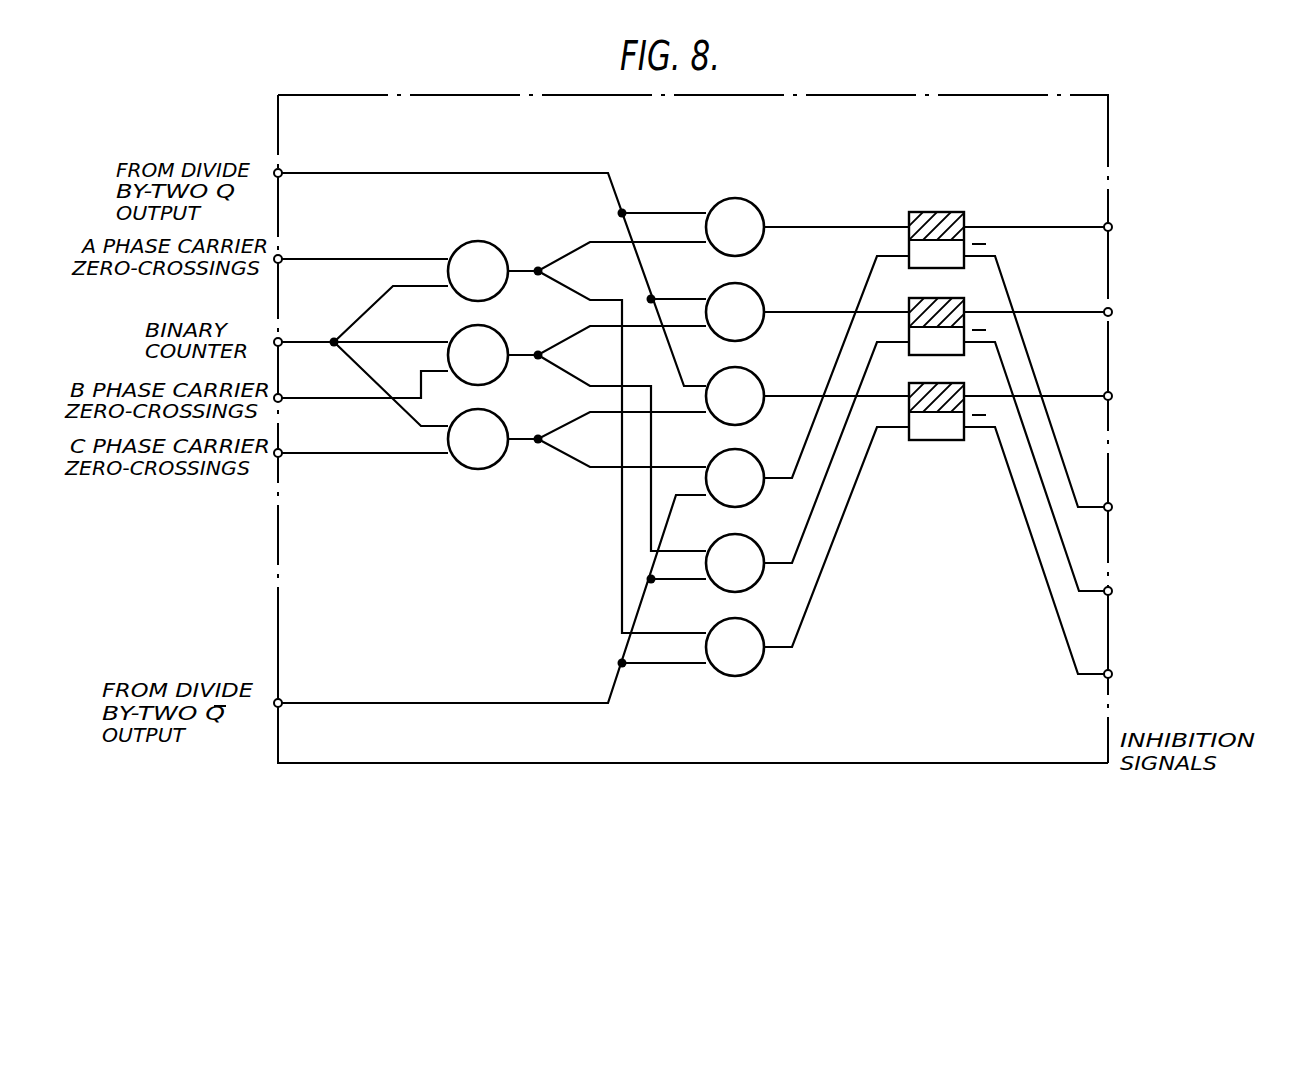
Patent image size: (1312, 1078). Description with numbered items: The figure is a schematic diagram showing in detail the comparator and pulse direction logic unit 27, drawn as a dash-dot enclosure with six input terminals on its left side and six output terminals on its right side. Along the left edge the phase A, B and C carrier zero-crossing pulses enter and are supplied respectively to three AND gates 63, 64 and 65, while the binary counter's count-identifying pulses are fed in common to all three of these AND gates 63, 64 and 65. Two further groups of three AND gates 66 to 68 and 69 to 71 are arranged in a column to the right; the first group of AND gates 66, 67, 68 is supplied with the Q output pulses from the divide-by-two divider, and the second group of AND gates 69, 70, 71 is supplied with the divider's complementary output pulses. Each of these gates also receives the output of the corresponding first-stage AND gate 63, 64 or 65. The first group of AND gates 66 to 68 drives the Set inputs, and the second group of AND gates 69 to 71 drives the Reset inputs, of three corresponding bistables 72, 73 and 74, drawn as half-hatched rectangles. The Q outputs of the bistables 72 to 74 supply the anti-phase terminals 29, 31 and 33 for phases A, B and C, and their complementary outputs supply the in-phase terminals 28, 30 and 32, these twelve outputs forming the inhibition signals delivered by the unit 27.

The logic unit 27 is at (1108, 160).
The in-phase terminal 28 is at (1112, 504).
The anti-phase terminal 29 is at (1123, 218).
The in-phase terminal 30 is at (1112, 588).
The anti-phase terminal 31 is at (1112, 310).
The in-phase terminal 32 is at (1112, 672).
The anti-phase terminal 33 is at (1112, 394).
The AND gate 63 is at (500, 251).
The AND gate 64 is at (500, 335).
The AND gate 65 is at (500, 422).
The AND gate 66 is at (760, 217).
The AND gate 67 is at (760, 302).
The AND gate 68 is at (760, 382).
The AND gate 69 is at (758, 462).
The AND gate 70 is at (757, 545).
The AND gate 71 is at (757, 630).
The bistable 72 is at (963, 215).
The bistable 73 is at (940, 298).
The bistable 74 is at (918, 391).